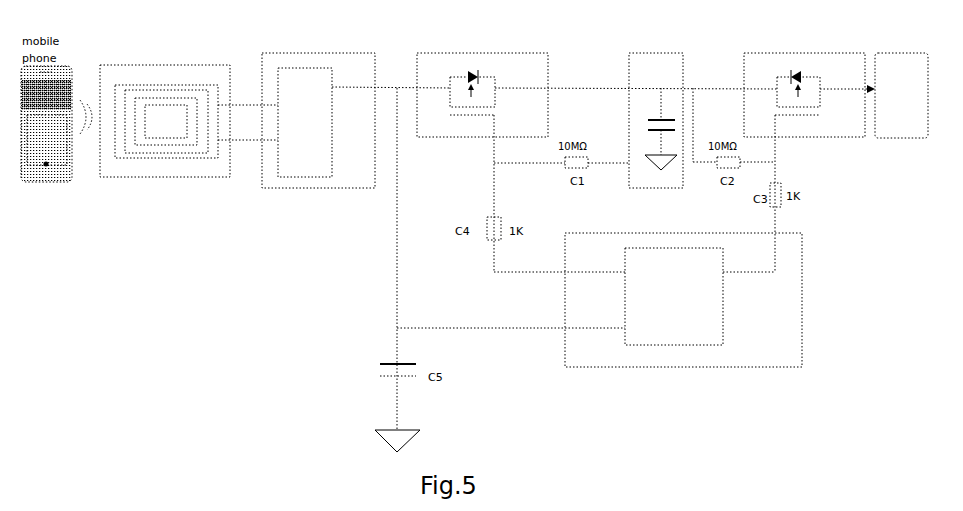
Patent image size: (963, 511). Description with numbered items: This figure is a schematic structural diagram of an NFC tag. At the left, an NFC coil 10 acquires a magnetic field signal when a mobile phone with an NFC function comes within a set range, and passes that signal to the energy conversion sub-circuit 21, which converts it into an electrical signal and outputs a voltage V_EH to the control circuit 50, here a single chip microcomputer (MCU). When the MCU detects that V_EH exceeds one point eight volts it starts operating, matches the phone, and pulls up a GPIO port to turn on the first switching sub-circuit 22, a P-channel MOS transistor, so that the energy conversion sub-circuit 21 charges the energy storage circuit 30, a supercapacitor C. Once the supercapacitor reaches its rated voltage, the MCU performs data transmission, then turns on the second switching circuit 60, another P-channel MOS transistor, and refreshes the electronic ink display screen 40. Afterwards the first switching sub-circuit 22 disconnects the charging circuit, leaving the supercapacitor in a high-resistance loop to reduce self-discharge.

The NFC coil 10 is at (155, 65).
The energy conversion sub-circuit 21 is at (296, 53).
The first switching sub-circuit 22 is at (466, 53).
The energy storage circuit 30 is at (652, 53).
The electronic ink display screen 40 is at (901, 95).
The control circuit 50 is at (802, 312).
The second switching circuit 60 is at (789, 53).